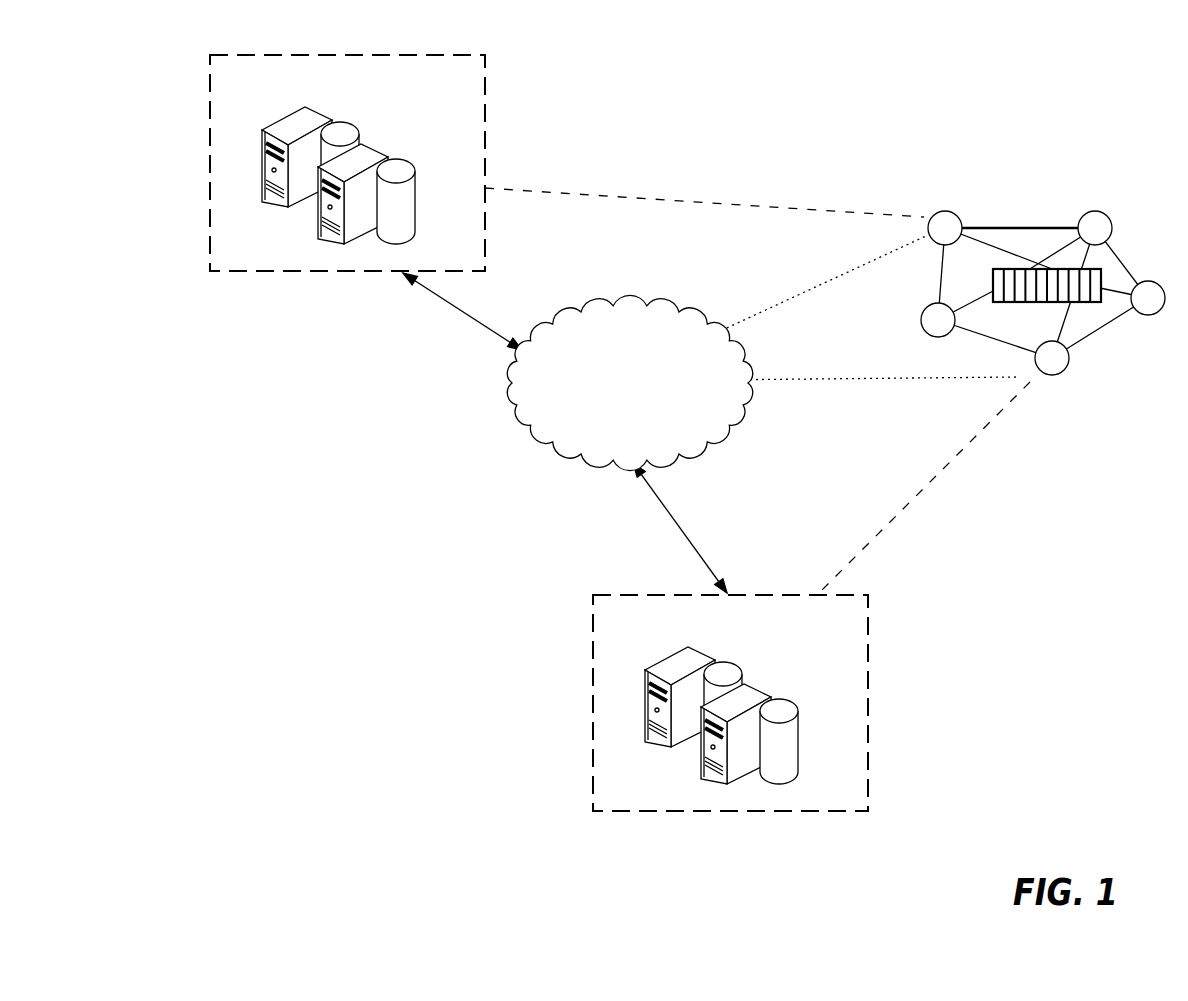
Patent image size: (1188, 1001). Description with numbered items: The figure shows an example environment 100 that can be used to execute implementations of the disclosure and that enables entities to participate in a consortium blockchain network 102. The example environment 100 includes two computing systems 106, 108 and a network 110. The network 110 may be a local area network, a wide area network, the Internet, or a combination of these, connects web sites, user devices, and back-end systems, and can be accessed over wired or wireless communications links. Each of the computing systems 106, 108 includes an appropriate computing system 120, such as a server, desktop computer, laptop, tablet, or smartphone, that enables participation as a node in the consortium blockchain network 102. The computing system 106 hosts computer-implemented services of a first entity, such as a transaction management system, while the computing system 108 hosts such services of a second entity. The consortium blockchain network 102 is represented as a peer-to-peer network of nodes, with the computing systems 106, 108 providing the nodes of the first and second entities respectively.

The example environment 100 is at (215, 596).
The consortium blockchain network 102 is at (1095, 175).
The computing system 106 is at (485, 163).
The computing system 108 is at (868, 708).
The network 110 is at (628, 307).
The computing system 120 is at (357, 137).